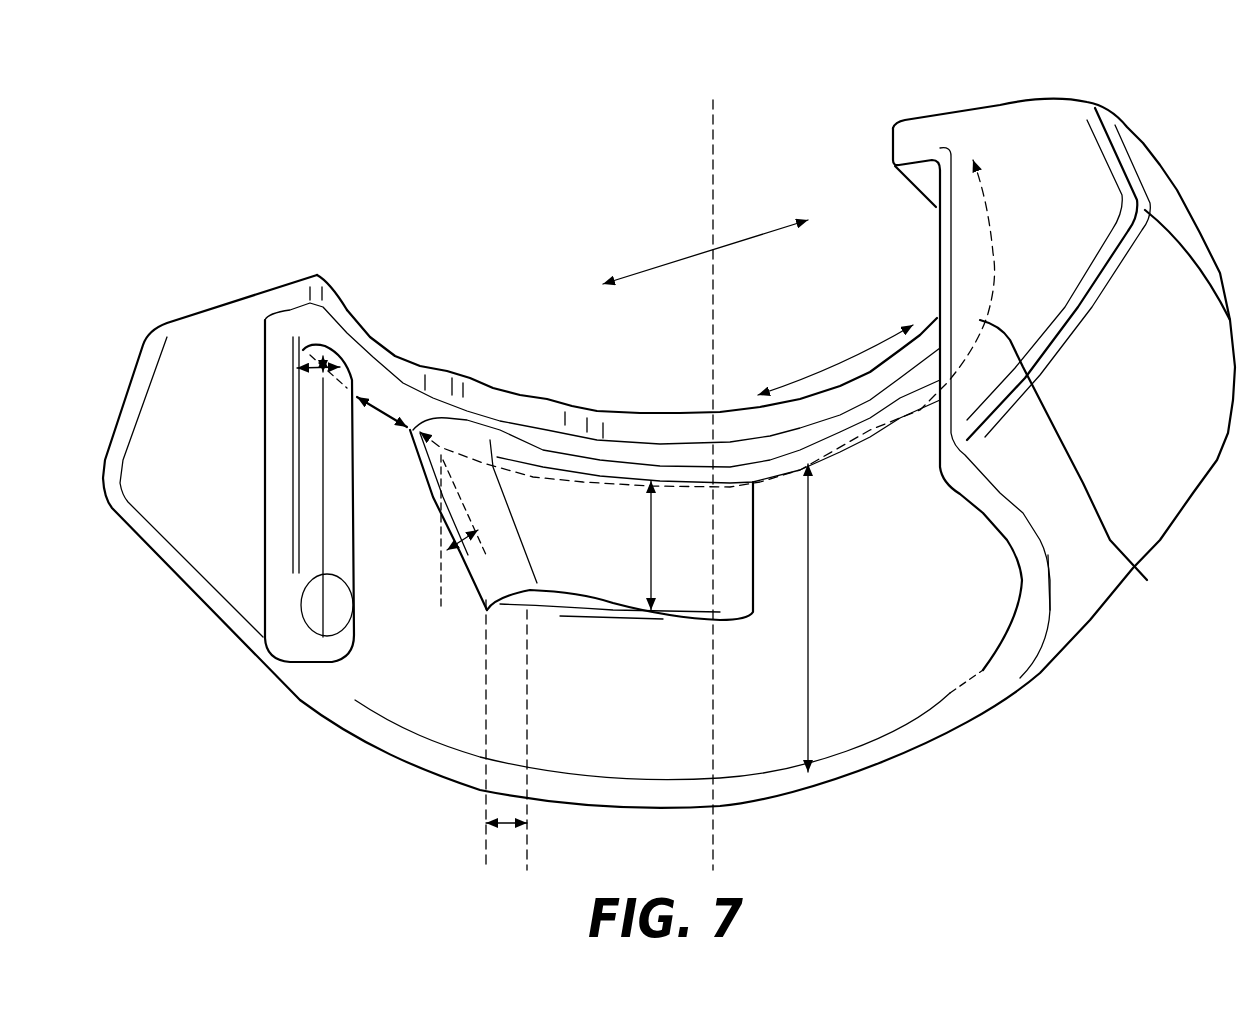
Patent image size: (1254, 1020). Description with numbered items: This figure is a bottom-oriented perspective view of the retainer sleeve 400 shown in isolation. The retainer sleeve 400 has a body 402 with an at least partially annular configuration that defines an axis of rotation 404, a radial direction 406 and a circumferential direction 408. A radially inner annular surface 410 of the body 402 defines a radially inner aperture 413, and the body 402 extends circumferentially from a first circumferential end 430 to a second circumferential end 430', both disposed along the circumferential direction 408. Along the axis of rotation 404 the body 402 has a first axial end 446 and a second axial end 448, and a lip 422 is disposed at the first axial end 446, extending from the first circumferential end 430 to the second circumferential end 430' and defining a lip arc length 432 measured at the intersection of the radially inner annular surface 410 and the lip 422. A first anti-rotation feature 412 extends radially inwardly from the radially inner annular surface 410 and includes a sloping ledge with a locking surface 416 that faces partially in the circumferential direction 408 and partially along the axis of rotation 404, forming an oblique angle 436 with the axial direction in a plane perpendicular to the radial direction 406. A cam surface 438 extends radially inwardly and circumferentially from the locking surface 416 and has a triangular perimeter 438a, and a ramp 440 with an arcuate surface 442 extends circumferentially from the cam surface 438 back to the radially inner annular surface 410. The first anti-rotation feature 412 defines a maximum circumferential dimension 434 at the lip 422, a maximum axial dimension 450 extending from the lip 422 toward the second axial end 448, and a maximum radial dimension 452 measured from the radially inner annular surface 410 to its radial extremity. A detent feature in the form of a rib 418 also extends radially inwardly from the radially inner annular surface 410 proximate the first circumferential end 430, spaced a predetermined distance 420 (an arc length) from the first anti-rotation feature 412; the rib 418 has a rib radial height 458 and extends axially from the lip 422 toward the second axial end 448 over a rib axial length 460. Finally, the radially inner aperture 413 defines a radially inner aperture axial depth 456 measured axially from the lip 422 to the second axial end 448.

The retainer sleeve 400 is at (940, 62).
The body 402 is at (1143, 137).
The axis of rotation 404 is at (713, 845).
The radial direction 406 is at (641, 270).
The circumferential direction 408 is at (833, 360).
The radially inner annular surface 410 is at (885, 641).
The first anti-rotation feature 412 is at (560, 495).
The radially inner aperture 413 is at (893, 700).
The locking surface 416 is at (477, 548).
The rib 418 is at (318, 592).
The predetermined distance 420 is at (380, 417).
The lip 422 is at (320, 280).
The first circumferential end 430 is at (551, 558).
The second circumferential end 430' is at (978, 403).
The lip arc length 432 is at (1147, 580).
The maximum circumferential dimension 434 is at (677, 482).
The oblique angle 436 is at (465, 557).
The cam surface 438 is at (493, 513).
The triangular perimeter 438a is at (497, 440).
The ramp 440 is at (673, 627).
The arcuate surface 442 is at (613, 595).
The first axial end 446 is at (1003, 108).
The second axial end 448 is at (1033, 630).
The maximum axial dimension 450 is at (650, 540).
The maximum radial dimension 452 is at (506, 826).
The radially inner aperture axial depth 456 is at (812, 498).
The rib radial height 458 is at (307, 347).
The rib axial length 460 is at (337, 537).